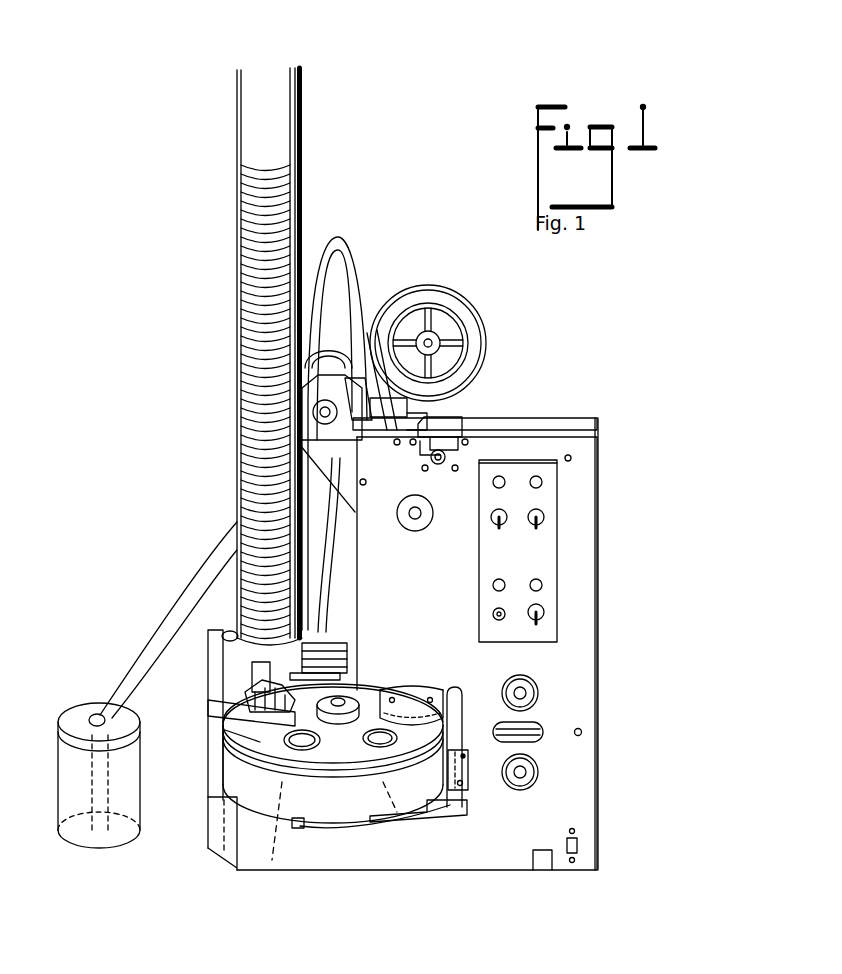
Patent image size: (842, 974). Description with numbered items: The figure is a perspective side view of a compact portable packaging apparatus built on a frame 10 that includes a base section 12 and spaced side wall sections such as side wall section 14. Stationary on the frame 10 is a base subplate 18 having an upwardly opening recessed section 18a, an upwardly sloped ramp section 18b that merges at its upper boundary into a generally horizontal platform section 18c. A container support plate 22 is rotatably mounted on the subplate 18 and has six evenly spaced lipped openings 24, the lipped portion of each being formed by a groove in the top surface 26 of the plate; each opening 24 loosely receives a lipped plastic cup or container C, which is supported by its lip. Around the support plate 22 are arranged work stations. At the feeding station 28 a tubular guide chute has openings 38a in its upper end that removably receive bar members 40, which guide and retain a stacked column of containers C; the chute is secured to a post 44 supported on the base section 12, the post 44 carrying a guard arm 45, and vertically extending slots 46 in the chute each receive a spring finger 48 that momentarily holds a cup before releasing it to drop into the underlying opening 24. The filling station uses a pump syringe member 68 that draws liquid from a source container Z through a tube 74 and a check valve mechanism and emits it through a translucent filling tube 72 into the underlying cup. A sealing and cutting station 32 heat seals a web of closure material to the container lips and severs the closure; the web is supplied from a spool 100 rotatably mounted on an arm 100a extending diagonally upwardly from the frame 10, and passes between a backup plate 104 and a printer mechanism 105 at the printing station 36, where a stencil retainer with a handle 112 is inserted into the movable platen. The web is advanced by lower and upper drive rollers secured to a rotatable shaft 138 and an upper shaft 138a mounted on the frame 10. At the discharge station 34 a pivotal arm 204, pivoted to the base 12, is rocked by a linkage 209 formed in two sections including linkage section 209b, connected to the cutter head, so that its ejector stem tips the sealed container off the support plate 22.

The frame 10 is at (601, 662).
The base section 12 is at (226, 852).
The side wall section 14 is at (588, 567).
The base subplate 18 is at (250, 779).
The recessed section 18a is at (220, 738).
The ramp section 18b is at (396, 812).
The platform section 18c is at (282, 782).
The container support plate 22 is at (236, 762).
The lipped opening 24 is at (378, 746).
The top surface 26 is at (413, 733).
The feeding station 28 is at (219, 630).
The sealing and cutting station 32 is at (447, 692).
The discharge station 34 is at (292, 826).
The printing station 36 is at (470, 451).
The openings 38a is at (300, 630).
The bar member 40 is at (240, 85).
The post 44 is at (212, 650).
The guard arm 45 is at (230, 758).
The slots 46 is at (240, 697).
The spring finger 48 is at (225, 672).
The pump syringe member 68 is at (308, 488).
The filling tube 72 is at (351, 262).
The tube 74 is at (210, 578).
The spool 100 is at (438, 330).
The arm 100a is at (452, 395).
The backup plate 104 is at (447, 424).
The printer mechanism 105 is at (417, 448).
The handle 112 is at (438, 465).
The rotatable shaft 138 is at (523, 772).
The upper shaft 138a is at (523, 693).
The pivotal arm 204 is at (302, 828).
The linkage 209 is at (458, 738).
The linkage section 209b is at (459, 796).
The container C is at (282, 228).
The container of substance Z is at (60, 730).